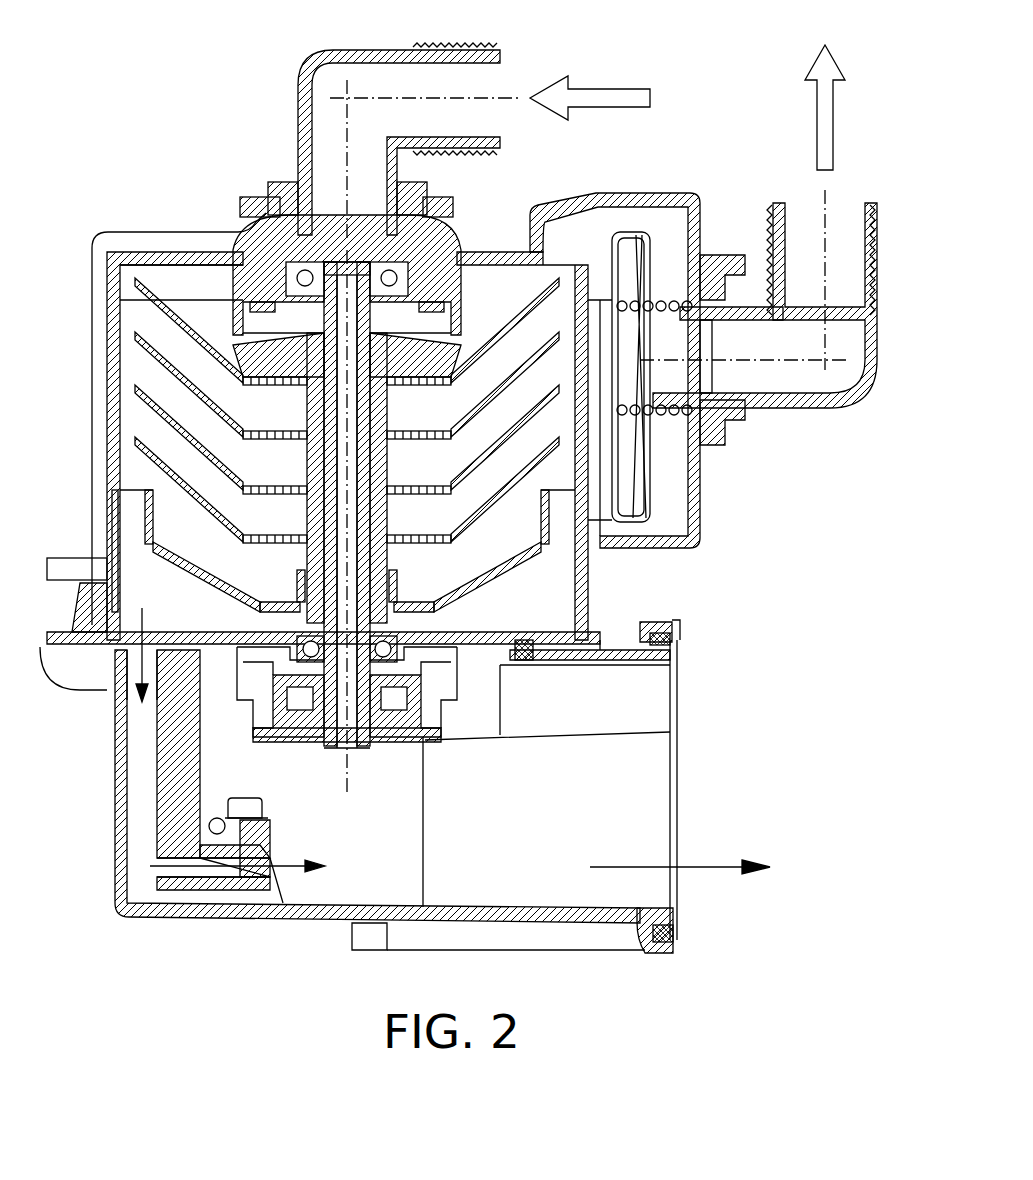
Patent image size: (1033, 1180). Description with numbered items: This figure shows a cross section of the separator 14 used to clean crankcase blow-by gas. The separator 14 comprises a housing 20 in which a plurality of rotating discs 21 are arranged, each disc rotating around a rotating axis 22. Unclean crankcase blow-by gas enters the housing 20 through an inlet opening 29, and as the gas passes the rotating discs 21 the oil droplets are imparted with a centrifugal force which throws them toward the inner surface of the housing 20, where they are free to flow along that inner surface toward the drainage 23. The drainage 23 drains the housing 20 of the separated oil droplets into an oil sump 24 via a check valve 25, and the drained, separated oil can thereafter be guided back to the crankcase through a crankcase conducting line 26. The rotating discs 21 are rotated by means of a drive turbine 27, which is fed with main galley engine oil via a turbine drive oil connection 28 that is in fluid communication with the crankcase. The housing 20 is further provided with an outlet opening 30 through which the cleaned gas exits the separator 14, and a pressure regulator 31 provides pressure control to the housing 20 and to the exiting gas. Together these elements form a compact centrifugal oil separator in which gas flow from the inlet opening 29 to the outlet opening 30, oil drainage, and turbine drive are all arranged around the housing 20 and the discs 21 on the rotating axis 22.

The separator 14 is at (146, 70).
The housing 20 is at (331, 930).
The rotating discs 21 is at (146, 366).
The rotating axis 22 is at (320, 442).
The drainage 23 is at (106, 706).
The oil sump 24 is at (310, 886).
The check valve 25 is at (240, 864).
The crankcase conducting line 26 is at (703, 870).
The drive turbine 27 is at (262, 699).
The turbine drive oil connection 28 is at (690, 708).
The inlet pipe 29 is at (625, 92).
The outlet opening 30 is at (818, 135).
The pressure regulator 31 is at (664, 504).